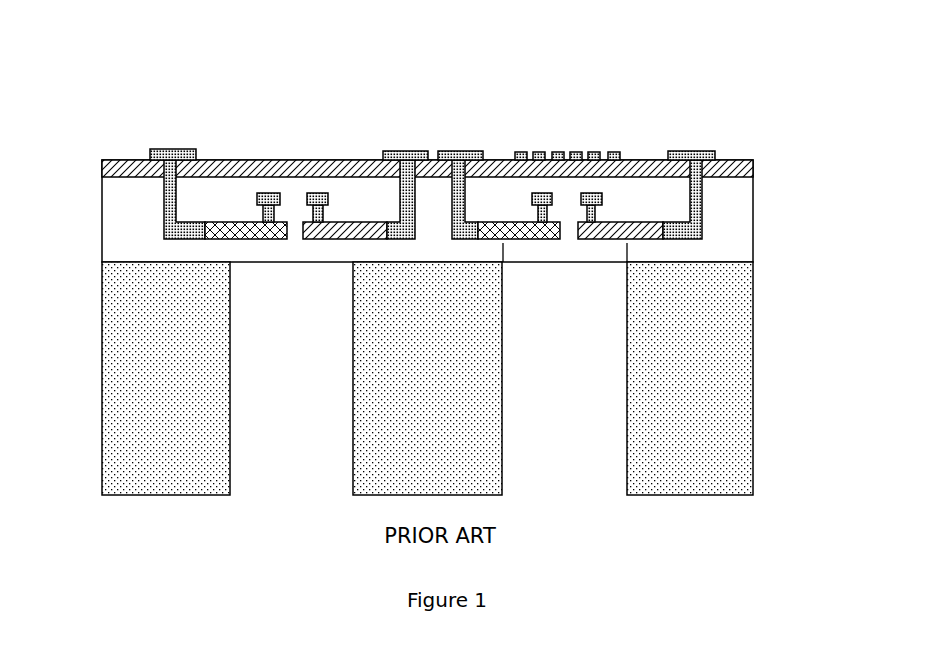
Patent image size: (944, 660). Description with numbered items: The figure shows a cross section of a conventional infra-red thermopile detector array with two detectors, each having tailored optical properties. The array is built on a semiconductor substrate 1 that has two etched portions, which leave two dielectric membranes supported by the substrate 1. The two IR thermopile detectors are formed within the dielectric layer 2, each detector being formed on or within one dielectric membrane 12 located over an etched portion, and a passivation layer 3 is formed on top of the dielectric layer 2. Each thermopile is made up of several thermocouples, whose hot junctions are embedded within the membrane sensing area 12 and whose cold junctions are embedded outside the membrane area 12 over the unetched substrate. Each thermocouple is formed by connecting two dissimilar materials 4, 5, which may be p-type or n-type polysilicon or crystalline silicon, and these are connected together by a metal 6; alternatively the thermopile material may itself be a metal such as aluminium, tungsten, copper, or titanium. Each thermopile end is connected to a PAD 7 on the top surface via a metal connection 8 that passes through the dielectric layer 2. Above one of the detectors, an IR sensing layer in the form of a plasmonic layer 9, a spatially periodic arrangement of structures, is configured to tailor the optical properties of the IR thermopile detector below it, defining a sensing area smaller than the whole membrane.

The semiconductor substrate 1 is at (205, 407).
The dielectric layer 2 is at (727, 218).
The passivation layer 3 is at (743, 171).
The first thermocouple material 4 is at (231, 241).
The second thermocouple material 5 is at (312, 243).
The metal 6 is at (330, 192).
The PAD 7 is at (160, 147).
The metal connection 8 is at (157, 215).
The plasmonic layer 9 is at (570, 145).
The dielectric membrane 12 is at (504, 250).